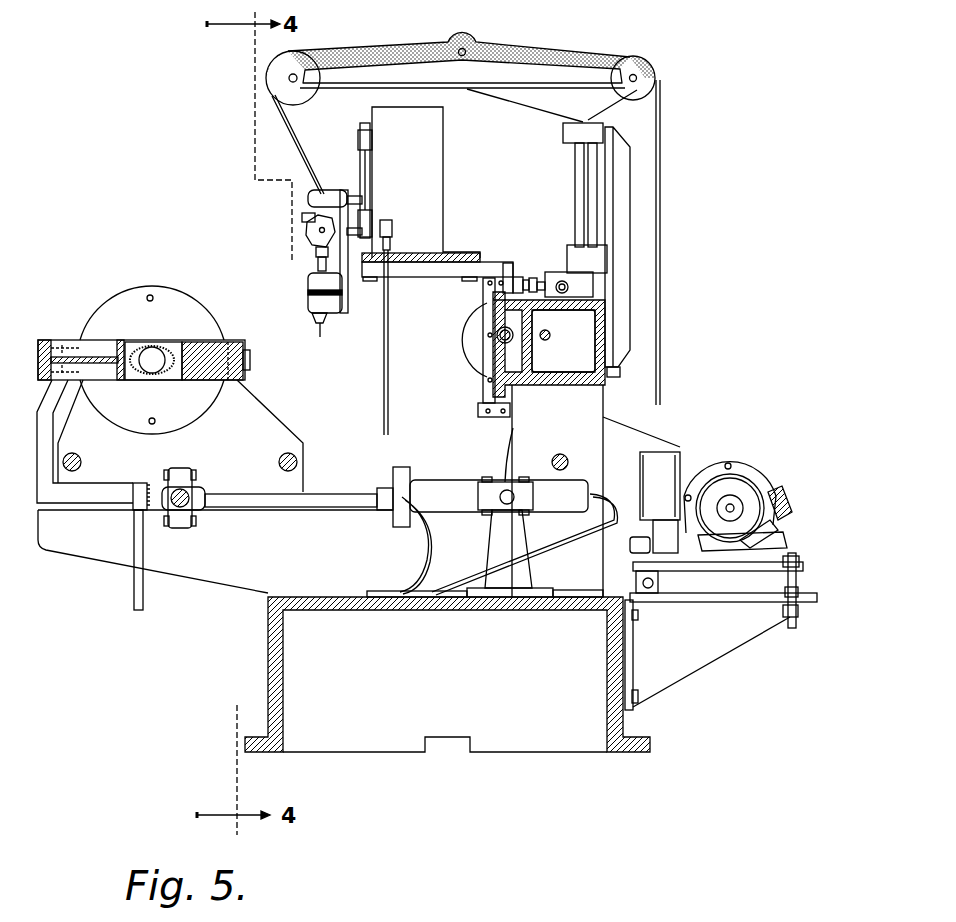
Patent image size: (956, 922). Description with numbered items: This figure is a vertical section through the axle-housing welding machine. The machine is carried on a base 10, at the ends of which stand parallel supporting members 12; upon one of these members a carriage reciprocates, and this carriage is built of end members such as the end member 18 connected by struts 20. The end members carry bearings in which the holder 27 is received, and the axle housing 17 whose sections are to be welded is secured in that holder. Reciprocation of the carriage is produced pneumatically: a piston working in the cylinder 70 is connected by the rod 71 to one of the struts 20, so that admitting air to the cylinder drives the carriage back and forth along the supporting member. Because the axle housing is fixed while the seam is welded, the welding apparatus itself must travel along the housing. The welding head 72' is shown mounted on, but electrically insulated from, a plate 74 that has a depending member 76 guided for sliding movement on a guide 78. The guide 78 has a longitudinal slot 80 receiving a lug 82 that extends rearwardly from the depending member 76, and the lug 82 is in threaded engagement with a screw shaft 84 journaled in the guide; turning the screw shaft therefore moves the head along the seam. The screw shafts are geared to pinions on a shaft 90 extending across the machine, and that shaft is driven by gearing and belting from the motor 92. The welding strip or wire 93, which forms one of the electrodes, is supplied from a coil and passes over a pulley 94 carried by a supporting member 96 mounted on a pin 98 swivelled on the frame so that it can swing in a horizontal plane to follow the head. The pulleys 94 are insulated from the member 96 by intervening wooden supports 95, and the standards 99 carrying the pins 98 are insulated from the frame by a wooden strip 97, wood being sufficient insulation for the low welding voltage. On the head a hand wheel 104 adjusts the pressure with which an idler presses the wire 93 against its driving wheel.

The base 10 is at (575, 743).
The supporting member 12 is at (222, 572).
The axle housing 17 is at (170, 348).
The end member 18 is at (260, 420).
The strut 20 is at (80, 460).
The holder 27 is at (212, 342).
The cylinder 70 is at (437, 487).
The rod 71 is at (330, 497).
The welding head 72' is at (431, 182).
The plate 74 is at (497, 263).
The depending member 76 is at (485, 380).
The guide 78 is at (483, 305).
The longitudinal slot 80 is at (490, 320).
The lug 82 is at (497, 343).
The screw shaft 84 is at (530, 330).
The shaft 90 is at (550, 338).
The motor 92 is at (760, 468).
The welding strip or wire 93 is at (297, 147).
The pulley 94 is at (300, 52).
The wooden support 95 is at (367, 47).
The supporting member 96 is at (573, 68).
The wooden strip 97 is at (607, 383).
The pin 98 is at (580, 193).
The standard 99 is at (620, 190).
The hand wheel 104 is at (308, 233).